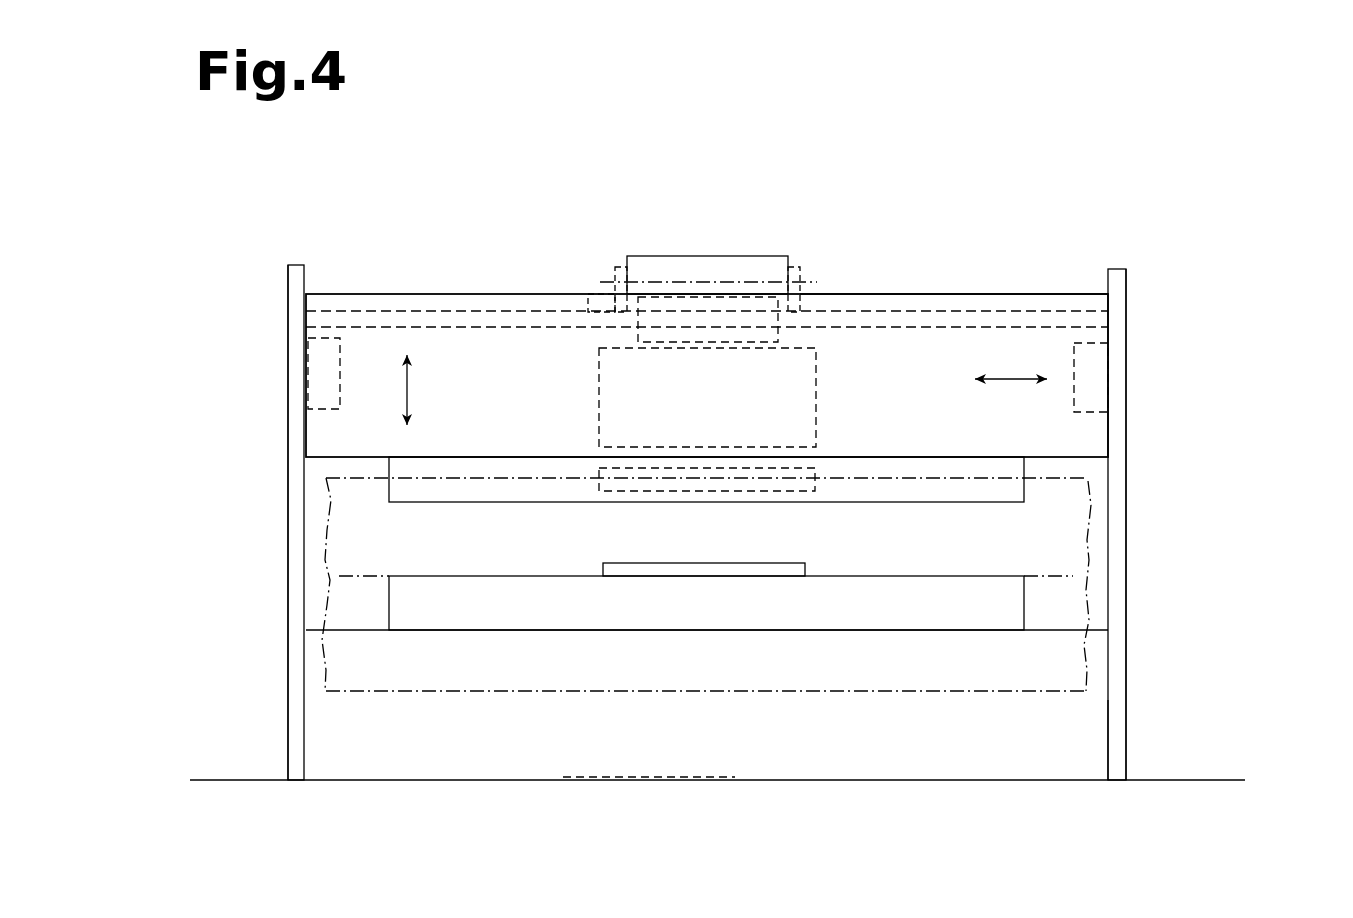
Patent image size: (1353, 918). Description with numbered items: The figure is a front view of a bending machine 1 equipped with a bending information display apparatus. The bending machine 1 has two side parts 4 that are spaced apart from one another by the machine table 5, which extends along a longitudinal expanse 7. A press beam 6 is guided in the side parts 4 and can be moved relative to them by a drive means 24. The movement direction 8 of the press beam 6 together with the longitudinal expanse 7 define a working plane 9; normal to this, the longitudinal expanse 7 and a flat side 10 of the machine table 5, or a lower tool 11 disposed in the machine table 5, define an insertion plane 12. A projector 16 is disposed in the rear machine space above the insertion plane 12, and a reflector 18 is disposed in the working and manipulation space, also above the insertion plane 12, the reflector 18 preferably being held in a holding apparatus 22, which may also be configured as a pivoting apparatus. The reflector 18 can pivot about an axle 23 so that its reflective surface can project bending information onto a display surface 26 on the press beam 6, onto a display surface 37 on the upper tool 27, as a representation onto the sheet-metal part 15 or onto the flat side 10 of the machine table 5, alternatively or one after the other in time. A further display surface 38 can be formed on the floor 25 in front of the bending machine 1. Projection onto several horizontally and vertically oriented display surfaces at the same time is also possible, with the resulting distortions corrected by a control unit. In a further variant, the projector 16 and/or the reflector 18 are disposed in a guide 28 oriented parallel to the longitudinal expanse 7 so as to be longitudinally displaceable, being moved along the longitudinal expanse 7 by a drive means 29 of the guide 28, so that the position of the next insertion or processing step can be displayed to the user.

The bending machine 1 is at (1148, 297).
The side parts 4 is at (301, 305).
The machine table 5 is at (1083, 743).
The press beam 6 is at (498, 353).
The longitudinal expanse 7 is at (1013, 377).
The movement direction 8 is at (402, 390).
The working plane 9 is at (1056, 673).
The flat side 10 is at (1071, 629).
The lower tool 11 is at (402, 603).
The insertion plane 12 is at (1065, 575).
The sheet-metal part 15 is at (700, 572).
The projector 16 is at (718, 322).
The reflector 18 is at (644, 268).
The holding apparatus 22 is at (809, 258).
The axle 23 is at (810, 280).
The drive means 24 is at (320, 373).
The floor 25 is at (910, 772).
The display surface 26 is at (603, 380).
The upper tool 27 is at (1007, 493).
The guide 28 is at (977, 300).
The drive means 29 is at (598, 302).
The display surface 37 is at (601, 478).
The display surface 38 is at (604, 777).